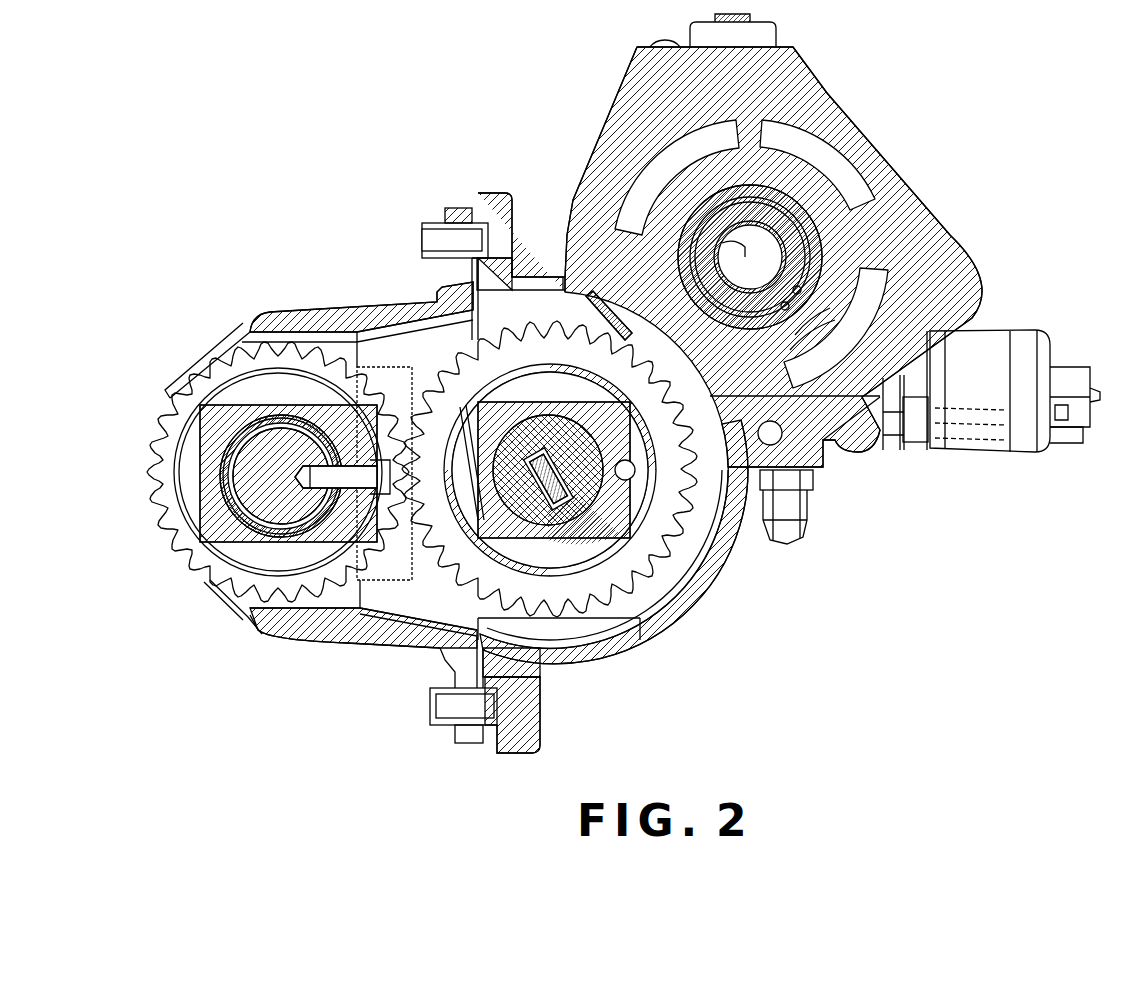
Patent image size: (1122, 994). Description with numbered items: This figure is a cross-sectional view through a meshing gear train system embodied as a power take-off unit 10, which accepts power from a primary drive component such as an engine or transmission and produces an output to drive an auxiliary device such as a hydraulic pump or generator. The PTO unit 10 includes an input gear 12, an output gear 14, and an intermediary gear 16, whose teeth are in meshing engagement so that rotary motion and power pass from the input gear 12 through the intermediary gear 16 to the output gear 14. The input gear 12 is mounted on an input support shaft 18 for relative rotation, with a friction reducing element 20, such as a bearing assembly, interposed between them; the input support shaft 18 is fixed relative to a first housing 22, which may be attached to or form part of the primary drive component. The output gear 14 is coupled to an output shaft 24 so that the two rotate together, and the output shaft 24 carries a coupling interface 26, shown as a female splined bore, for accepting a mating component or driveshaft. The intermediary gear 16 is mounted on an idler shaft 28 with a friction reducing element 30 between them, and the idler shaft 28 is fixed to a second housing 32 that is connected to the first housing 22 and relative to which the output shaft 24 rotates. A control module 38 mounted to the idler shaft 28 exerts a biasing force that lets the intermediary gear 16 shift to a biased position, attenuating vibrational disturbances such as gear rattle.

The power take-off (PTO) unit 10 is at (362, 124).
The input gear 12 is at (180, 545).
The output gear 14 is at (808, 143).
The intermediary gear 16 is at (652, 528).
The input support shaft 18 is at (245, 457).
The friction reducing element 20 is at (272, 397).
The first housing 22 is at (350, 305).
The output shaft 24 is at (783, 222).
The coupling interface 26 is at (718, 242).
The idler shaft 28 is at (515, 493).
The friction reducing element 30 is at (544, 378).
The second housing 32 is at (797, 420).
The control module 38 is at (580, 524).